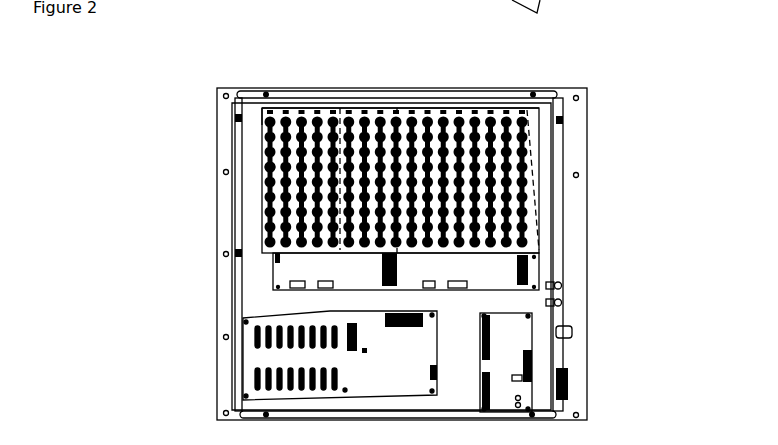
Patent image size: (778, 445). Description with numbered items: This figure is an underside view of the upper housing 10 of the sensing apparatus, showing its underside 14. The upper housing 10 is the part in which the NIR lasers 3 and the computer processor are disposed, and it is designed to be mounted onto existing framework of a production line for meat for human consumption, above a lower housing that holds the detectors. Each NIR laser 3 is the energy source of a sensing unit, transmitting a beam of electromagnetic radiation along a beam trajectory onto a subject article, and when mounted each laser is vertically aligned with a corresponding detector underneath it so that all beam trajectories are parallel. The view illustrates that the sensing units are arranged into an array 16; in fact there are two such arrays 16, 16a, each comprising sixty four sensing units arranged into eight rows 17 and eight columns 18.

The upper housing 10 is at (217, 253).
The underside 14 is at (240, 228).
The array 16 is at (262, 188).
The array 16a is at (587, 188).
The rows 17 is at (262, 139).
The columns 18 is at (262, 115).
The NIR laser 3 is at (262, 168).